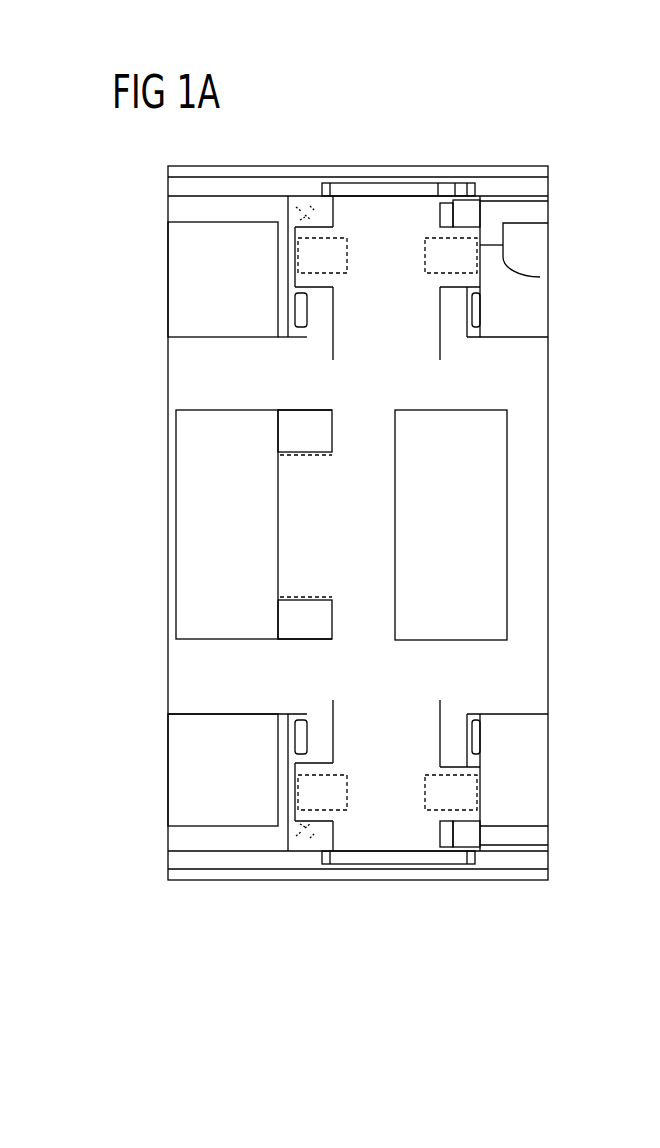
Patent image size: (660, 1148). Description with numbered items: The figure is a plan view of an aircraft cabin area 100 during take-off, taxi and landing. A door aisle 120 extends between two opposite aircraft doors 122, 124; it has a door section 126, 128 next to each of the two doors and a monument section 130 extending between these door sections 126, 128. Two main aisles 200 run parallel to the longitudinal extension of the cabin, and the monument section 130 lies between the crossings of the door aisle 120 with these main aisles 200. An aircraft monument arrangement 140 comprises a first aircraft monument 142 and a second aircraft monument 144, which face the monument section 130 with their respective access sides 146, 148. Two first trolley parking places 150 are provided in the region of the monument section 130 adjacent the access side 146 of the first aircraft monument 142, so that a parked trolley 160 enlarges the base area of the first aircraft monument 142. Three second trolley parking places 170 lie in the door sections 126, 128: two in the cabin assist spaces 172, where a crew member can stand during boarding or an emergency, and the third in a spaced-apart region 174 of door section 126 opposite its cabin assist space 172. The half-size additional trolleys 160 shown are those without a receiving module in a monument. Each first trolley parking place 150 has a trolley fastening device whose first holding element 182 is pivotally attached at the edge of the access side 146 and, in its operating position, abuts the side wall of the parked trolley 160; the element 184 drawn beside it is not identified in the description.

The aircraft cabin area 100 is at (565, 406).
The door aisle 120 is at (372, 350).
The aircraft door 122 is at (400, 192).
The aircraft door 124 is at (412, 862).
The door section 126 is at (372, 245).
The door section 128 is at (372, 809).
The monument section 130 is at (322, 560).
The aircraft monument arrangement 140 is at (410, 525).
The first aircraft monument 142 is at (209, 474).
The second aircraft monument 144 is at (437, 507).
The access side 146 is at (284, 521).
The access side 148 is at (393, 497).
The first trolley parking place 150 is at (340, 432).
The trolley 160 is at (298, 456).
The second trolley parking place 170 is at (277, 310).
The cabin assist space 172 is at (342, 228).
The spaced-apart region 174 is at (437, 228).
The first holding element 182 is at (296, 407).
The block 184 is at (290, 440).
The main aisle 200 is at (192, 370).